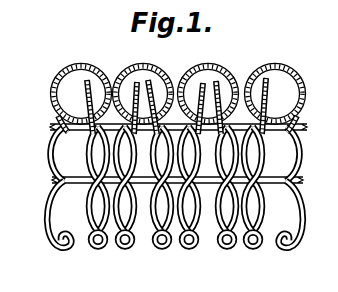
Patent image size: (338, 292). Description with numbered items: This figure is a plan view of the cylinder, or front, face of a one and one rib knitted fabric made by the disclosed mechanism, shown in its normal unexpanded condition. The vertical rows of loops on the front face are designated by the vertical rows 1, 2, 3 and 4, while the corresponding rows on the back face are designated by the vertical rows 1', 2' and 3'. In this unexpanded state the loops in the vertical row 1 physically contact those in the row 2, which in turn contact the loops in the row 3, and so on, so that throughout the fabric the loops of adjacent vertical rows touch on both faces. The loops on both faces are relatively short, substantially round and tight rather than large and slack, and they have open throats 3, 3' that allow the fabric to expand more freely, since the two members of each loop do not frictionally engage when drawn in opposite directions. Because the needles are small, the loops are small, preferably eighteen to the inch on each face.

The vertical row of loops 1 is at (81, 86).
The vertical row of loops 1' is at (98, 90).
The vertical row of loops 2 is at (143, 82).
The vertical row of loops 2' is at (156, 91).
The vertical row of loops 3 is at (166, 156).
The vertical row of loops 3' is at (220, 91).
The vertical row of loops 4 is at (275, 86).